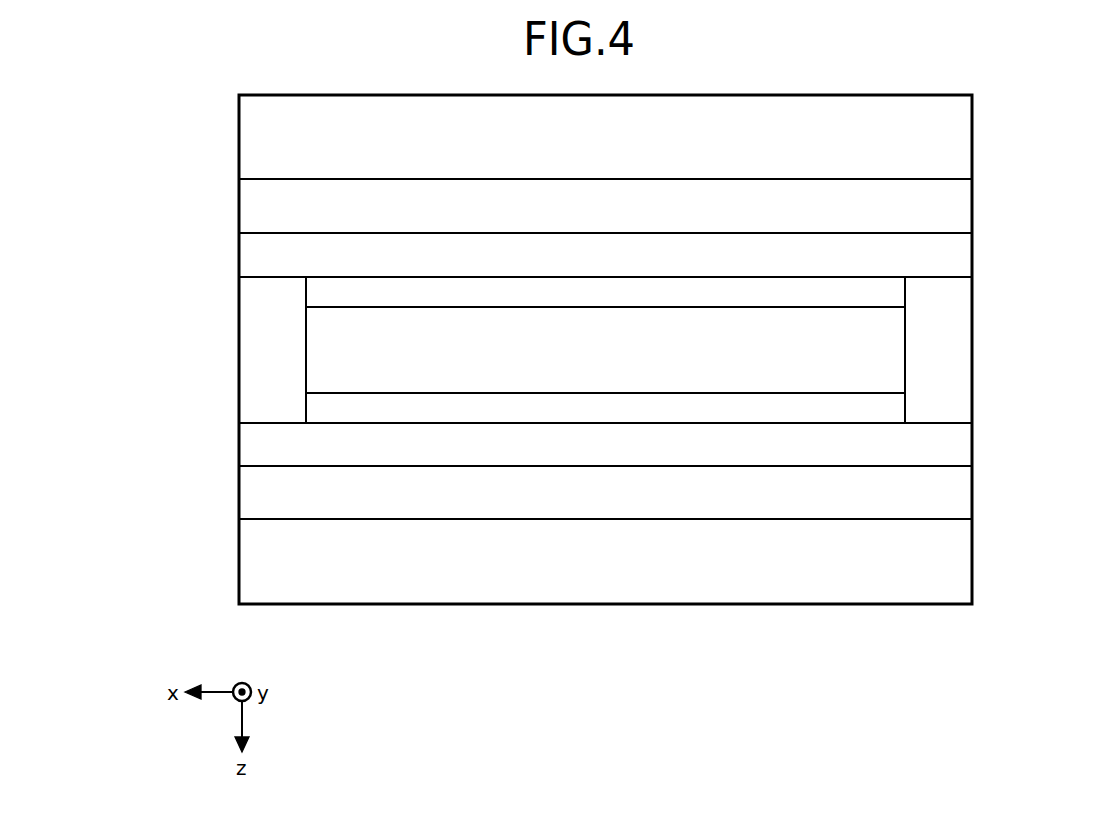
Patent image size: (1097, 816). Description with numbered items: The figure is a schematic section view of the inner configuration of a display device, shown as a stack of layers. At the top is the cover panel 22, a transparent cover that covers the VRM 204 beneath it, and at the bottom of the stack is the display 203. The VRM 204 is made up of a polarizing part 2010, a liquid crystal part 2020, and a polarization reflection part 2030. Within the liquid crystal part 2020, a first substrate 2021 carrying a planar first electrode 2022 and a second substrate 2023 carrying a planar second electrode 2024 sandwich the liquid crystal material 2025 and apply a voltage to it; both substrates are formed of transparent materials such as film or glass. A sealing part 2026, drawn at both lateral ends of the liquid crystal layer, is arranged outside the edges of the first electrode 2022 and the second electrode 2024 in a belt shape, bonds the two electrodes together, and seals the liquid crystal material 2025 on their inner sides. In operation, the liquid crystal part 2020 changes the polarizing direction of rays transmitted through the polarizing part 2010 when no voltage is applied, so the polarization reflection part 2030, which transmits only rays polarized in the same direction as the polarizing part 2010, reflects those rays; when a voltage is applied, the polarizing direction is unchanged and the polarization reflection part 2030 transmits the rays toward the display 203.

The cover panel 22 is at (972, 138).
The VRM 204 is at (133, 180).
The polarizing part 2010 is at (972, 202).
The liquid crystal part 2020 is at (233, 233).
The first substrate 2021 is at (972, 250).
The first electrode 2022 is at (907, 288).
The liquid crystal material 2025 is at (907, 307).
The sealing part 2026 is at (972, 355).
The second electrode 2024 is at (907, 410).
The second substrate 2023 is at (972, 443).
The polarization reflection part 2030 is at (972, 490).
The display 203 is at (972, 557).